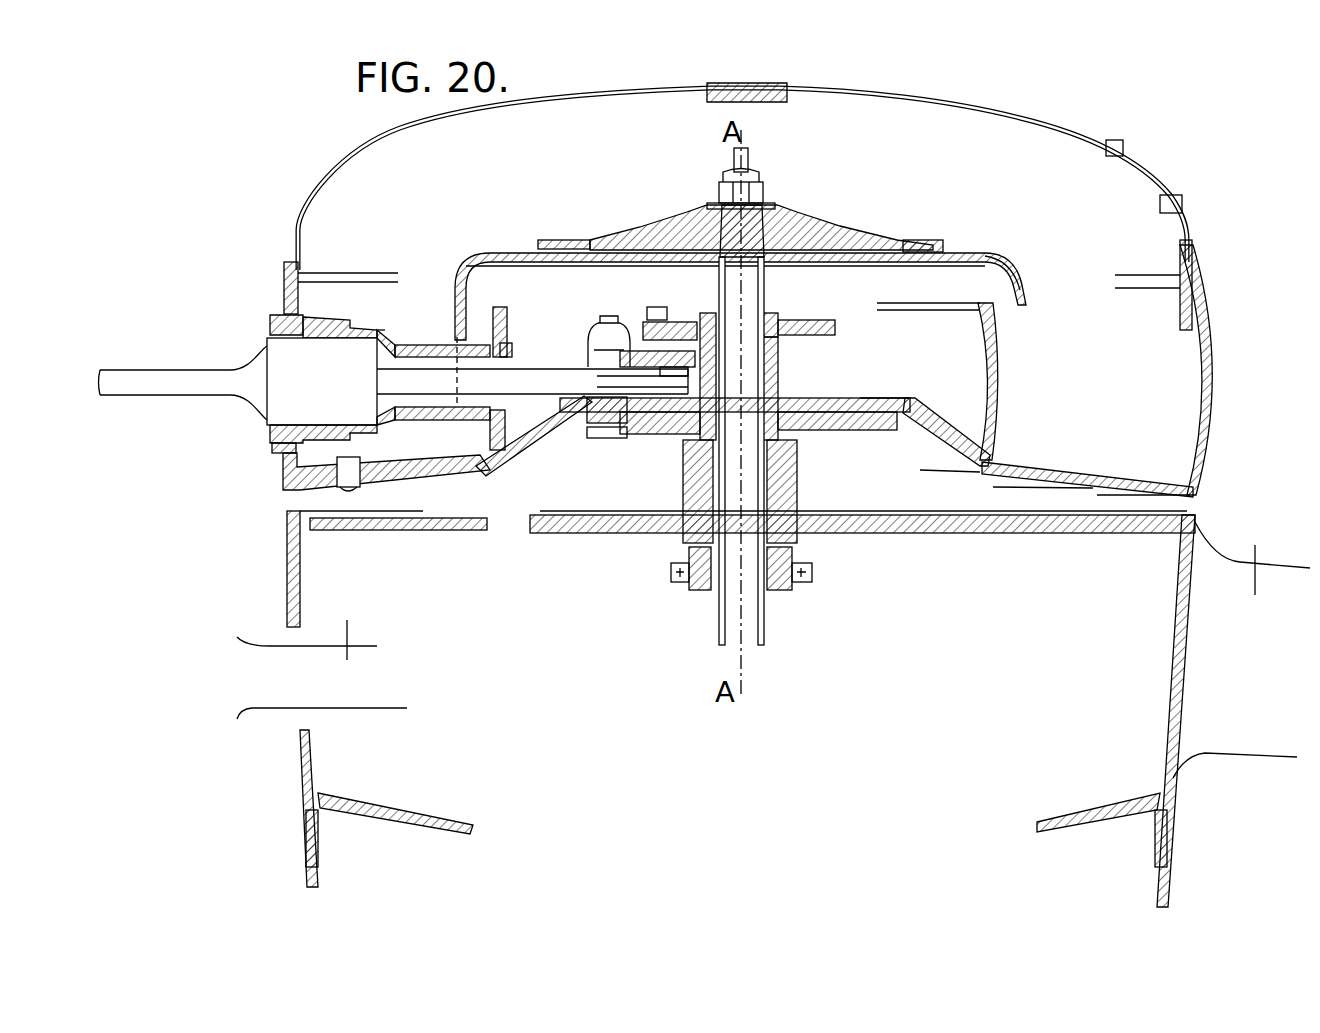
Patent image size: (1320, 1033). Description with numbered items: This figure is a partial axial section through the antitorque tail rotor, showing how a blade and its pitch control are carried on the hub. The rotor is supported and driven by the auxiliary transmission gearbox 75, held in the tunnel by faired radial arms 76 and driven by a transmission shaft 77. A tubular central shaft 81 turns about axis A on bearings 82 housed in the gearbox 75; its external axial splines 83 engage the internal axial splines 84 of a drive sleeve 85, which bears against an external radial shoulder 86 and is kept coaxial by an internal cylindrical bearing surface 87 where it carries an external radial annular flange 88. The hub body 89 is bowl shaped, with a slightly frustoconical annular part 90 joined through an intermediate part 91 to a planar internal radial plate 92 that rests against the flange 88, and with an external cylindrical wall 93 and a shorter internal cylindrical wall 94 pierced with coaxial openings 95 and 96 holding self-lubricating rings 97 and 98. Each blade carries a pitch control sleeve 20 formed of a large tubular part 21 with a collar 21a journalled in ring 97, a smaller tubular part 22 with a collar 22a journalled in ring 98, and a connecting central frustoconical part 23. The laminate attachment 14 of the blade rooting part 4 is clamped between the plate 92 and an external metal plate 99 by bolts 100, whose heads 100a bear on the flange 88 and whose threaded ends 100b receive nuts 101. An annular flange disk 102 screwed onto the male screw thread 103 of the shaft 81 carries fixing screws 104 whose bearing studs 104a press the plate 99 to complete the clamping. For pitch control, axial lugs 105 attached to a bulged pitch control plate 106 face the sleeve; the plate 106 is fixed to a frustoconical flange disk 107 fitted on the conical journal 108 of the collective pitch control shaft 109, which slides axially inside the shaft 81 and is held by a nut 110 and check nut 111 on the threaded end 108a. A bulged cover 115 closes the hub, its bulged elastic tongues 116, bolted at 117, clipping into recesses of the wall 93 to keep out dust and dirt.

The bulged cover 115 is at (318, 196).
The circular opening 95 is at (284, 305).
The collar 21a is at (270, 328).
The tubular part 21 is at (290, 348).
The self-lubricating ring 97 is at (274, 452).
The rooting part 4 is at (545, 385).
The central frustoconical part 23 is at (390, 342).
The tubular part 22 is at (410, 420).
The circular opening 96 is at (507, 335).
The collar 22a is at (512, 352).
The axial lug 105 is at (462, 318).
The pitch control plate 106 is at (1000, 254).
The pitch control sleeve 20 is at (388, 325).
The self-lubricating ring 98 is at (483, 470).
The bolt 100 is at (600, 430).
The bolt head 100a is at (615, 440).
The nut 101 is at (598, 332).
The threaded end 100b is at (608, 316).
The external metal plate 99 is at (695, 360).
The laminate attachment 14 is at (675, 380).
The bearing stud 104a is at (668, 322).
The fixing screw 104 is at (655, 307).
The male screw thread 103 is at (778, 318).
The annular flange disk 102 is at (835, 328).
The tubular central shaft 81 is at (778, 385).
The collective pitch control shaft 109 is at (764, 288).
The flange disk 107 is at (845, 242).
The conical journal 108 is at (712, 204).
The nut 110 is at (763, 192).
The check nut 111 is at (759, 176).
The threaded external axial end 108a is at (748, 160).
The external radial annular flange 88 is at (875, 415).
The internal radial plate 92 is at (862, 398).
The internal cylindrical bearing surface 87 is at (828, 432).
The external axial splines 83 is at (690, 515).
The drive sleeve 85 is at (790, 498).
The external radial shoulder 86 is at (689, 566).
The internal axial splines 84 is at (790, 520).
The bearing 82 is at (677, 582).
The internal cylindrical wall 94 is at (997, 380).
The intermediate part 91 is at (945, 430).
The slightly frustoconical annular part 90 is at (1070, 477).
The external cylindrical wall 93 is at (1210, 340).
The bulged elastic tongue 116 is at (1180, 254).
The bolt 117 is at (1182, 205).
The hub body 89 is at (1030, 490).
The faired radial arm 76 is at (1252, 554).
The auxiliary transmission gearbox 75 is at (1178, 630).
The transmission shaft 77 is at (362, 699).